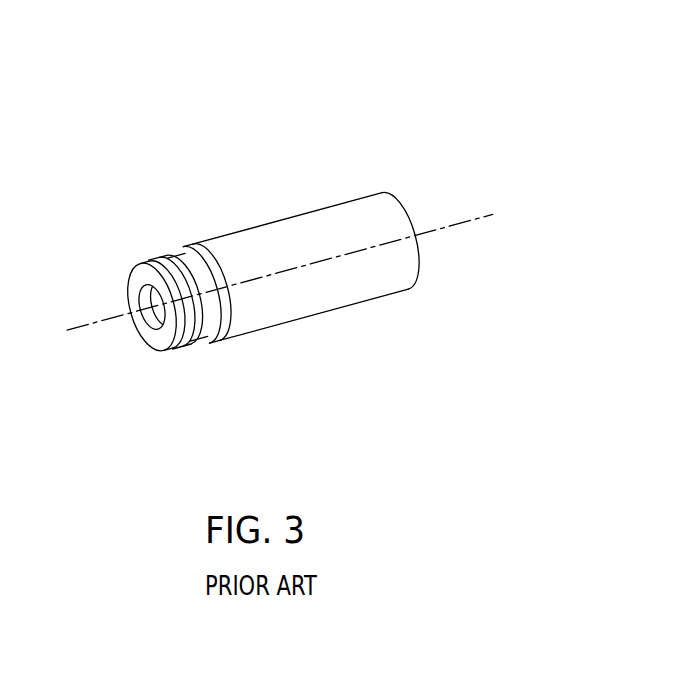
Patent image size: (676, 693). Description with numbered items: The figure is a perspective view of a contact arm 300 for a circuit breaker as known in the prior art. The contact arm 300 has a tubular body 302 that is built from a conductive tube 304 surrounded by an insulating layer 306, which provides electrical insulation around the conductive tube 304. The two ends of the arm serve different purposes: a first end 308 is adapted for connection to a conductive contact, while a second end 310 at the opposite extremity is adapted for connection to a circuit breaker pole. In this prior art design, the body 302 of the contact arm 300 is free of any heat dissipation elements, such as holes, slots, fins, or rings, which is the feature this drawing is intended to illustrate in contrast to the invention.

The contact arm 300 is at (467, 80).
The tubular body 302 is at (192, 350).
The conductive tube 304 is at (182, 252).
The insulating layer 306 is at (288, 235).
The first end 308 is at (132, 338).
The second end 310 is at (408, 203).